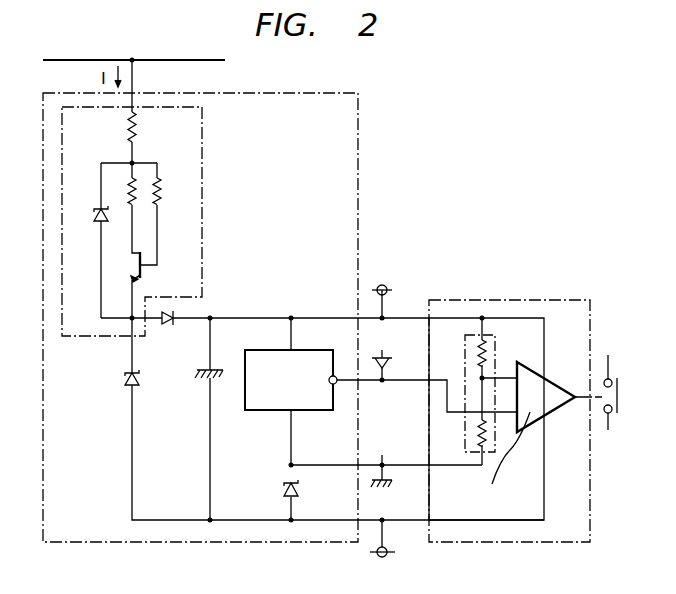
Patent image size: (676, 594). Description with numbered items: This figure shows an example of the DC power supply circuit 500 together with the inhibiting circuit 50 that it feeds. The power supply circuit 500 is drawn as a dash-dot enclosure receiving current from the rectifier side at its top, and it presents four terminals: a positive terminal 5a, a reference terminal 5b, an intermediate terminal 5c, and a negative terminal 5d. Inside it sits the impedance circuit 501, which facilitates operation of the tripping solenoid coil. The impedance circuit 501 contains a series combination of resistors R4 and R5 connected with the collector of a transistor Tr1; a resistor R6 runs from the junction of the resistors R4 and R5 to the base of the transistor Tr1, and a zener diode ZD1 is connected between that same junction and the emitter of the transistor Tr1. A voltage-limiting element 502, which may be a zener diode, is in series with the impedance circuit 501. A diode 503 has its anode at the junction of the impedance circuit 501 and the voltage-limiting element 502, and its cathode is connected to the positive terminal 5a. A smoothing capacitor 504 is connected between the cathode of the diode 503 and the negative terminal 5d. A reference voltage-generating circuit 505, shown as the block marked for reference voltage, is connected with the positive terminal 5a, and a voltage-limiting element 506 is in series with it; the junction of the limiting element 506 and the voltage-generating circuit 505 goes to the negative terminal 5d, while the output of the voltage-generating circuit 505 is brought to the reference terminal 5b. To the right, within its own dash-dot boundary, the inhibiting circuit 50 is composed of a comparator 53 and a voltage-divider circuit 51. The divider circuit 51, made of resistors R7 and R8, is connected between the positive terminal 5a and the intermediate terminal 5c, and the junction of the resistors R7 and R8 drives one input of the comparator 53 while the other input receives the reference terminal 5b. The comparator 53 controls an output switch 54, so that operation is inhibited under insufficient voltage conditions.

The DC power supply circuit 500 is at (300, 72).
The impedance circuit 501 is at (203, 166).
The resistor R4 is at (140, 125).
The resistor R5 is at (138, 195).
The resistor R6 is at (165, 198).
The zener diode ZD1 is at (98, 206).
The transistor Tr1 is at (135, 267).
The voltage-limiting element 502 is at (125, 379).
The diode 503 is at (168, 326).
The smoothing capacitor 504 is at (200, 378).
The reference voltage-generating circuit 505 is at (268, 348).
The voltage-limiting element 506 is at (283, 485).
The positive terminal 5a is at (382, 285).
The reference terminal 5b is at (381, 349).
The intermediate terminal 5c is at (382, 465).
The negative terminal 5d is at (386, 548).
The inhibiting circuit 50 is at (513, 300).
The voltage-divider circuit 51 is at (465, 362).
The resistor R7 is at (490, 352).
The resistor R8 is at (472, 432).
The comparator 53 is at (556, 385).
The output switch 54 is at (611, 433).